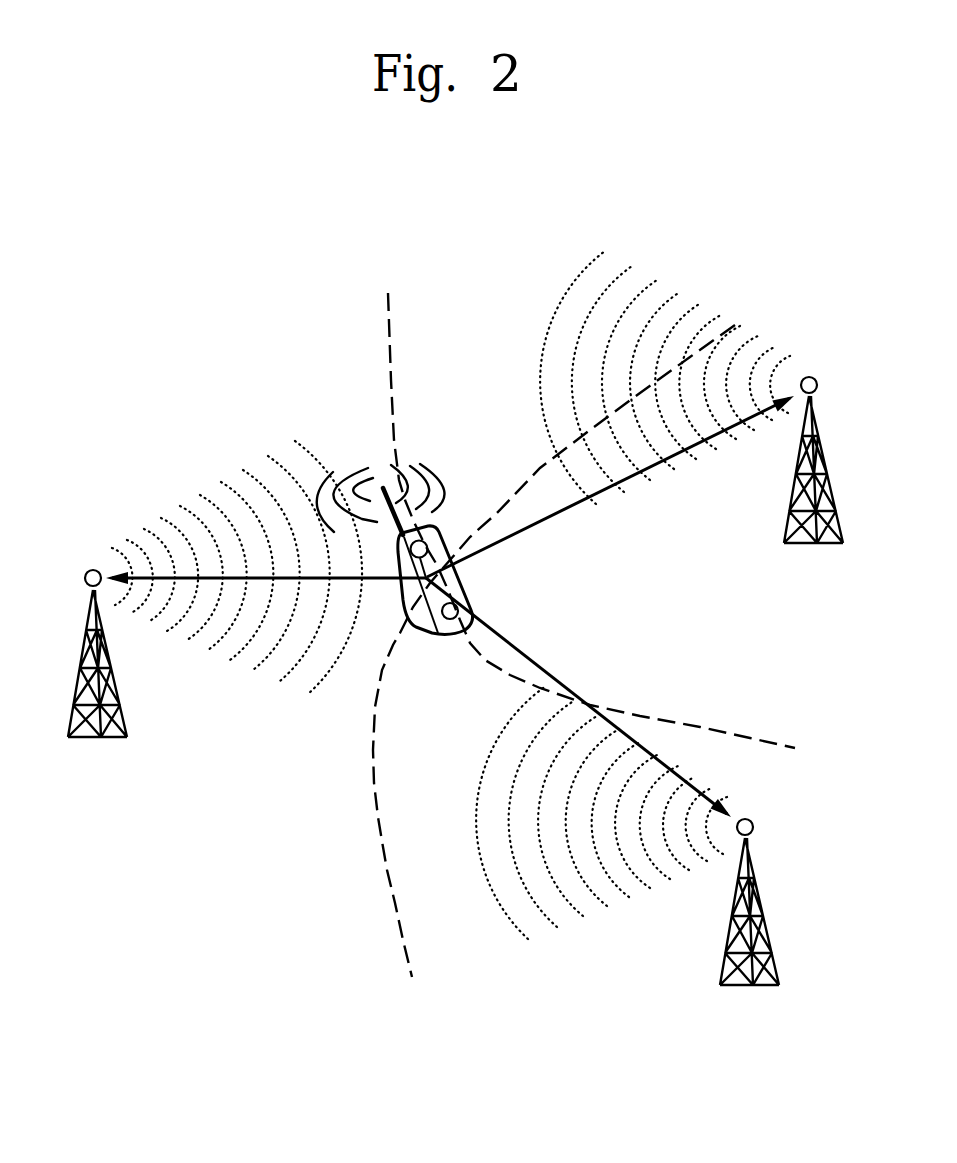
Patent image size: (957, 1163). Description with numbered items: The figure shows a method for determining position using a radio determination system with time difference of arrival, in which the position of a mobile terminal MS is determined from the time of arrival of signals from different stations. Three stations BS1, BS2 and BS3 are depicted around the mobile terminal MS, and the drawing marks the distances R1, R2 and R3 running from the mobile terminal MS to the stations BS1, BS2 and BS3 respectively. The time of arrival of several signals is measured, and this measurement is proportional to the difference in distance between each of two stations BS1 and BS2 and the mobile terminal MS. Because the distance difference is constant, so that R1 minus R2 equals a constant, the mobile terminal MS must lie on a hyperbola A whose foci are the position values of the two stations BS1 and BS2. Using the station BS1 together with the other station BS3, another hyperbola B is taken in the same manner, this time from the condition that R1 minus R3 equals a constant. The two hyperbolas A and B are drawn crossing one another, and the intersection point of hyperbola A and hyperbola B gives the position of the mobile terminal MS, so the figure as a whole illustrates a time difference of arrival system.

The hyperbola A is at (388, 343).
The hyperbola B is at (387, 868).
The distance R1 is at (255, 578).
The distance R2 is at (575, 504).
The distance R3 is at (521, 651).
The mobile terminal MS is at (395, 568).
The station BS1 is at (215, 608).
The station BS2 is at (691, 418).
The station BS3 is at (627, 855).